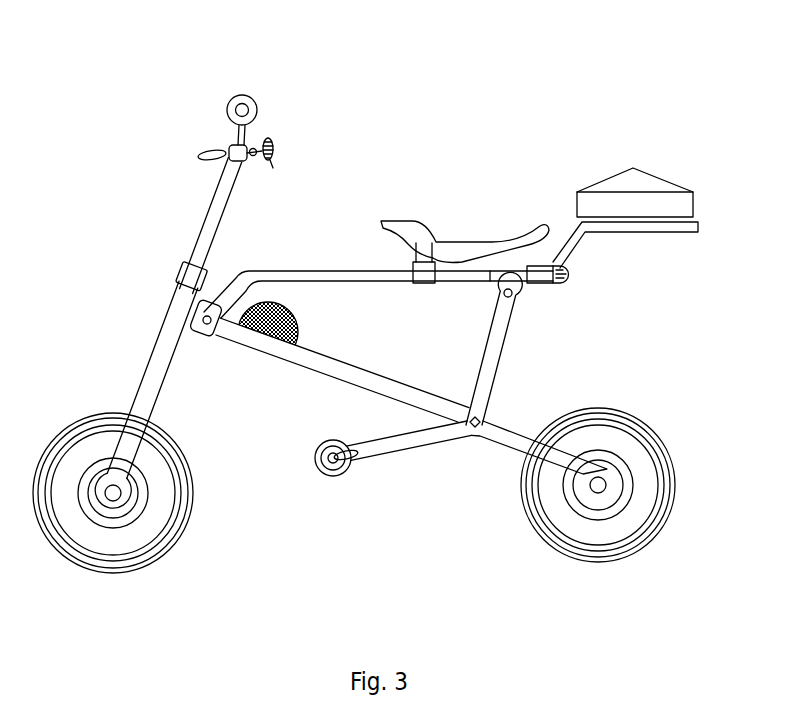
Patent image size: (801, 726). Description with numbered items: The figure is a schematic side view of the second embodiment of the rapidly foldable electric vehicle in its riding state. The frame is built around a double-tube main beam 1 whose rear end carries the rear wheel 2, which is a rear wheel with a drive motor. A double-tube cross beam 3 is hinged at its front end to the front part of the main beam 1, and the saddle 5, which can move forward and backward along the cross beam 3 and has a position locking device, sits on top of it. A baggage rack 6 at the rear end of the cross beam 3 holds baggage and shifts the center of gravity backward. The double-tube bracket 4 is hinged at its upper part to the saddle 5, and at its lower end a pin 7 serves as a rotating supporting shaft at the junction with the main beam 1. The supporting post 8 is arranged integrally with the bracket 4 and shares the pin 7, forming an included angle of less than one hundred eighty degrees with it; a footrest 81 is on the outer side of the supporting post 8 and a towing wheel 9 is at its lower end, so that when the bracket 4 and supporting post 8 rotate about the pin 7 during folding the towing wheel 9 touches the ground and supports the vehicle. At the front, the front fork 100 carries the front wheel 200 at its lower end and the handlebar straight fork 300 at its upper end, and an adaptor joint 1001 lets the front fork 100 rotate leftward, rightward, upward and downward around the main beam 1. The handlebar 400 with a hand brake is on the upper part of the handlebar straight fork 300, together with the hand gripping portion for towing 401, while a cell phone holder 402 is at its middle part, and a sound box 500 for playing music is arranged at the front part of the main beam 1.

The main beam 1 is at (342, 359).
The rear wheel 2 is at (633, 498).
The cross beam 3 is at (386, 222).
The bracket 4 is at (564, 348).
The saddle 5 is at (469, 196).
The baggage rack 6 is at (640, 191).
The pin 7 is at (538, 509).
The supporting post 8 is at (409, 514).
The towing wheel 9 is at (358, 522).
The footrest 81 is at (271, 511).
The front fork 100 is at (127, 394).
The front wheel 200 is at (104, 512).
The handlebar straight fork 300 is at (154, 226).
The handlebar 400 is at (166, 121).
The hand gripping portion for towing 401 is at (294, 77).
The cell phone holder 402 is at (315, 135).
The sound box 500 is at (310, 324).
The adaptor joint 1001 is at (227, 368).